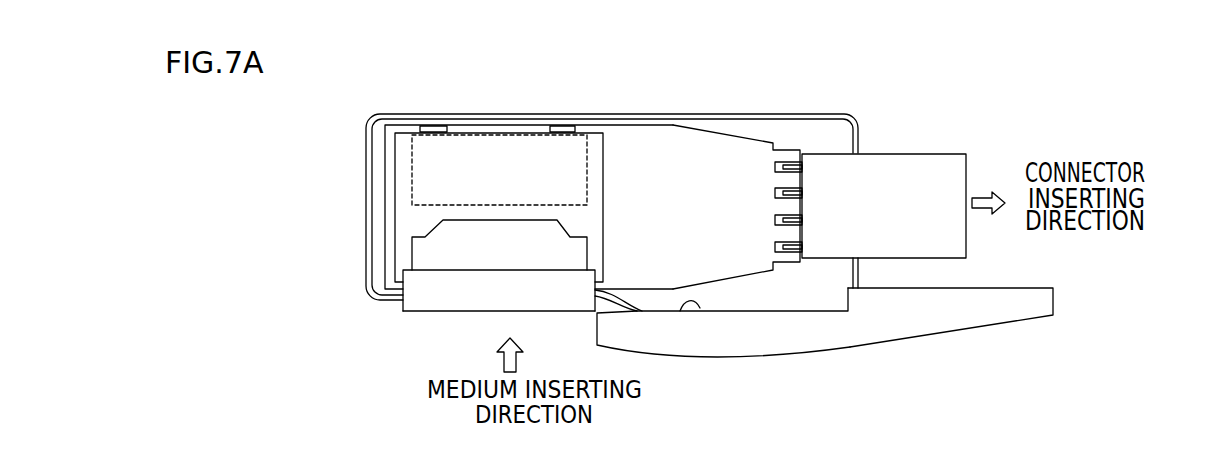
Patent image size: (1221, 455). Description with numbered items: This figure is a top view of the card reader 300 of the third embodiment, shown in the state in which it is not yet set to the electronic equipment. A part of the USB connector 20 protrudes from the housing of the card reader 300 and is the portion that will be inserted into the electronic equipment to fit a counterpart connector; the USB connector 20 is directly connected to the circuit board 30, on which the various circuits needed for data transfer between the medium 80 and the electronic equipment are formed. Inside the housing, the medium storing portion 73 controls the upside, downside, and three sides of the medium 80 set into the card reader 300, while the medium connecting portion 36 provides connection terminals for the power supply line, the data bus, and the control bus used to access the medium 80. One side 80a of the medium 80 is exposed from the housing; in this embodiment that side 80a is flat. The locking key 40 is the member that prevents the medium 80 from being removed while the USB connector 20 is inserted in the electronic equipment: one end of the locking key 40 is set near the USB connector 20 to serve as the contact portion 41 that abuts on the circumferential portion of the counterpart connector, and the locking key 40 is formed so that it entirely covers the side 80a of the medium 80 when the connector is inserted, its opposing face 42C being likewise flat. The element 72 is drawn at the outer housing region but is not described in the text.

The card reader 300 is at (580, 60).
The medium connecting portion 36 is at (412, 155).
The circuit board 30 is at (735, 152).
The USB connector 20 is at (889, 163).
The cover case 72 is at (366, 166).
The medium storing portion 73 is at (407, 222).
The medium 80 is at (422, 300).
The one side of the medium 80a is at (442, 311).
The locking key 40 is at (925, 322).
The contact portion 41 is at (1053, 298).
The opposing face 42C is at (700, 308).